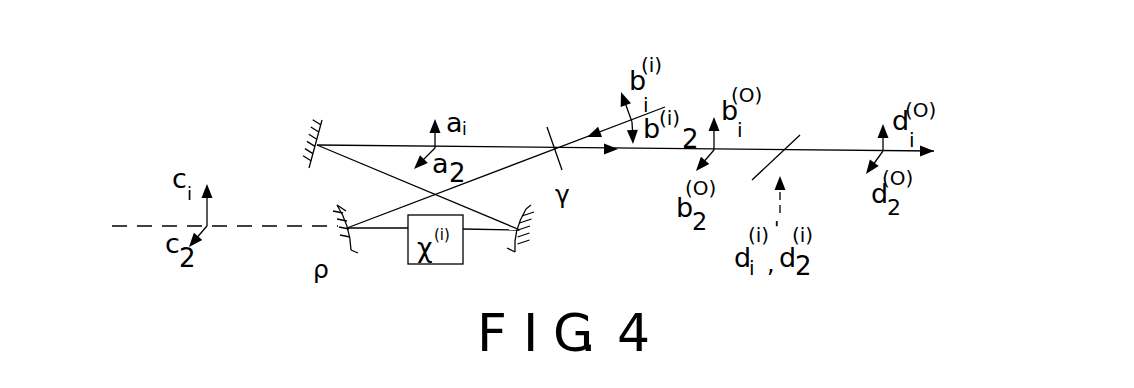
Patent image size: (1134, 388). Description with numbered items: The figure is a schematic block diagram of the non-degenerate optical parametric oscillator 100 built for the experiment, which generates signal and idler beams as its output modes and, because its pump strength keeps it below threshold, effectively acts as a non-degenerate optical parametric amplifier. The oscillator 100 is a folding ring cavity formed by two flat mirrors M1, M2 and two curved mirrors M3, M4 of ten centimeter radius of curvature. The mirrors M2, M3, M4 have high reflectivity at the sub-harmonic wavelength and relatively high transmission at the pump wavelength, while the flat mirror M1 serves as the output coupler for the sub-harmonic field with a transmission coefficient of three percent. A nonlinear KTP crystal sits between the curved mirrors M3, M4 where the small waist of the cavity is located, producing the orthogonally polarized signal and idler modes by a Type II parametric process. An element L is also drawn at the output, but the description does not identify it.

The non-degenerate optical parametric oscillator 100 is at (600, 74).
The flat mirror M1 is at (552, 136).
The flat mirror M2 is at (323, 130).
The curved mirror M3 is at (323, 220).
The curved mirror M4 is at (525, 250).
The lens L is at (781, 141).